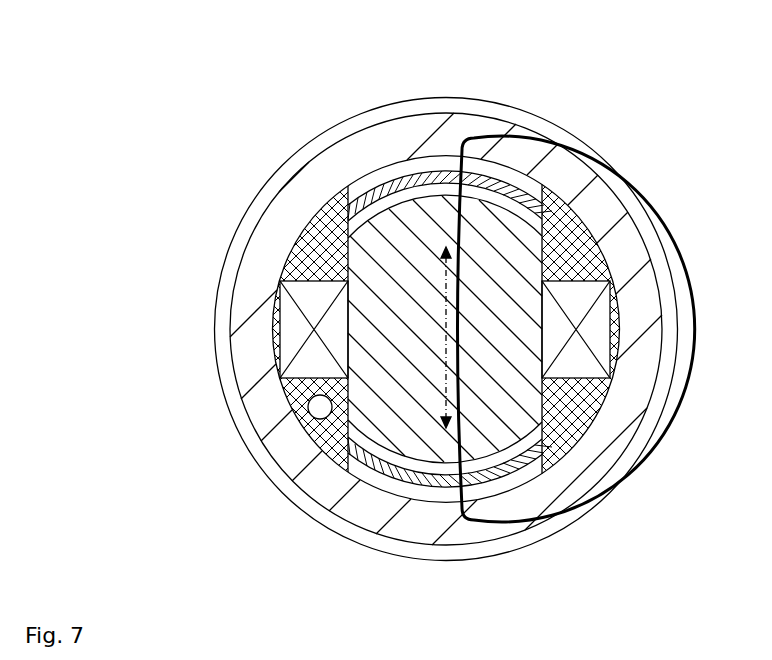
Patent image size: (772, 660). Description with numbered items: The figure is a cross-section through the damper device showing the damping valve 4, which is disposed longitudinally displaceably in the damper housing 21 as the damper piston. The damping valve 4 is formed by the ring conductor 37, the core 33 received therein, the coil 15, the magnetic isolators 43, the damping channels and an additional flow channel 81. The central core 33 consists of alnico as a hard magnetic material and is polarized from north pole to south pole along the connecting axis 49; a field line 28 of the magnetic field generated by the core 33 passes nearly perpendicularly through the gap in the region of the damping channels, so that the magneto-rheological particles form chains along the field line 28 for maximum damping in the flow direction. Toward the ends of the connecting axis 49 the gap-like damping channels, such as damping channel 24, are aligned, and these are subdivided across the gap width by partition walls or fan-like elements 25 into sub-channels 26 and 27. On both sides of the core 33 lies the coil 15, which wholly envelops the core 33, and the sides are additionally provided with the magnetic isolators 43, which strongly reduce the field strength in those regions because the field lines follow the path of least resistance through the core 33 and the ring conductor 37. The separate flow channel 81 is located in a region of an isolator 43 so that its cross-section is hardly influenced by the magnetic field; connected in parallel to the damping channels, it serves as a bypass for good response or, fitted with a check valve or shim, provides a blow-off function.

The damping valve 4 is at (184, 285).
The coil 15 is at (600, 331).
The damper housing 21 is at (490, 115).
The damping channel 24 is at (405, 498).
The fan-like element 25 is at (440, 488).
The sub-channel 26 is at (412, 166).
The sub-channel 27 is at (378, 168).
The field line 28 is at (562, 170).
The core 33 is at (505, 233).
The ring conductor 37 is at (590, 478).
The magnetic isolator 43 is at (305, 250).
The connecting axis 49 is at (438, 270).
The flow channel 81 is at (308, 407).